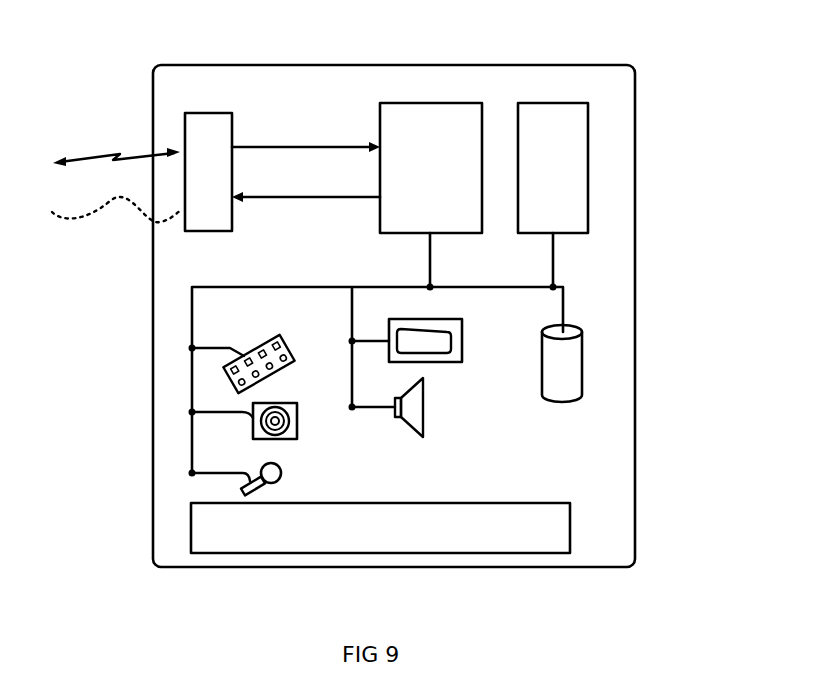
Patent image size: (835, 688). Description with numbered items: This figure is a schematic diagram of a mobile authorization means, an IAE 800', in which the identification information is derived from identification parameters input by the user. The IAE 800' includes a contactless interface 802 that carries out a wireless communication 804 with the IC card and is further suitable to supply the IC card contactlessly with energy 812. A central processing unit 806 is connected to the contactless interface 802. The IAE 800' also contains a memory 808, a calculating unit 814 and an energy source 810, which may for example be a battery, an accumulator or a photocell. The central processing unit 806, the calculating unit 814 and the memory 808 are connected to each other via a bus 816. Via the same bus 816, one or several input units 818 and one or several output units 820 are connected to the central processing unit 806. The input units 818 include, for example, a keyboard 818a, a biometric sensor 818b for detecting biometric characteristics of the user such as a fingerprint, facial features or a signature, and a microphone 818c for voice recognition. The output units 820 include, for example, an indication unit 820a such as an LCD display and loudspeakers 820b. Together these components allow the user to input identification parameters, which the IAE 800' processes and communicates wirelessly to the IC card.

The IAE 800' is at (442, 316).
The contactless interface 802 is at (219, 112).
The wireless communication 804 is at (133, 154).
The central processing unit 806 is at (427, 103).
The memory 808 is at (583, 368).
The energy source 810 is at (570, 528).
The energy 812 is at (92, 211).
The calculating unit 814 is at (558, 103).
The bus 816 is at (561, 299).
The input units 818 is at (154, 470).
The keyboard 818a is at (224, 370).
The biometric sensor 818b is at (253, 425).
The microphone 818c is at (198, 486).
The output units 820 is at (571, 440).
The indication unit 820a is at (462, 342).
The loudspeakers 820b is at (423, 413).